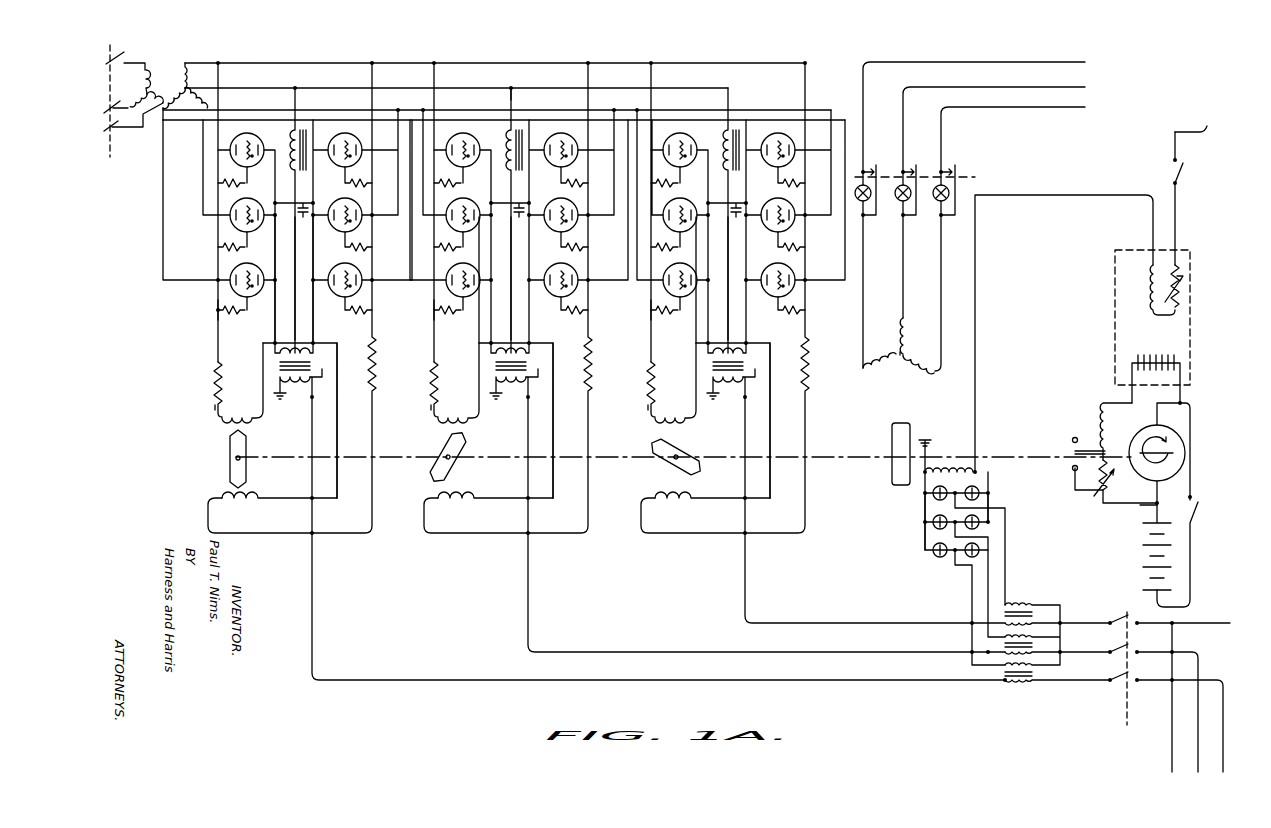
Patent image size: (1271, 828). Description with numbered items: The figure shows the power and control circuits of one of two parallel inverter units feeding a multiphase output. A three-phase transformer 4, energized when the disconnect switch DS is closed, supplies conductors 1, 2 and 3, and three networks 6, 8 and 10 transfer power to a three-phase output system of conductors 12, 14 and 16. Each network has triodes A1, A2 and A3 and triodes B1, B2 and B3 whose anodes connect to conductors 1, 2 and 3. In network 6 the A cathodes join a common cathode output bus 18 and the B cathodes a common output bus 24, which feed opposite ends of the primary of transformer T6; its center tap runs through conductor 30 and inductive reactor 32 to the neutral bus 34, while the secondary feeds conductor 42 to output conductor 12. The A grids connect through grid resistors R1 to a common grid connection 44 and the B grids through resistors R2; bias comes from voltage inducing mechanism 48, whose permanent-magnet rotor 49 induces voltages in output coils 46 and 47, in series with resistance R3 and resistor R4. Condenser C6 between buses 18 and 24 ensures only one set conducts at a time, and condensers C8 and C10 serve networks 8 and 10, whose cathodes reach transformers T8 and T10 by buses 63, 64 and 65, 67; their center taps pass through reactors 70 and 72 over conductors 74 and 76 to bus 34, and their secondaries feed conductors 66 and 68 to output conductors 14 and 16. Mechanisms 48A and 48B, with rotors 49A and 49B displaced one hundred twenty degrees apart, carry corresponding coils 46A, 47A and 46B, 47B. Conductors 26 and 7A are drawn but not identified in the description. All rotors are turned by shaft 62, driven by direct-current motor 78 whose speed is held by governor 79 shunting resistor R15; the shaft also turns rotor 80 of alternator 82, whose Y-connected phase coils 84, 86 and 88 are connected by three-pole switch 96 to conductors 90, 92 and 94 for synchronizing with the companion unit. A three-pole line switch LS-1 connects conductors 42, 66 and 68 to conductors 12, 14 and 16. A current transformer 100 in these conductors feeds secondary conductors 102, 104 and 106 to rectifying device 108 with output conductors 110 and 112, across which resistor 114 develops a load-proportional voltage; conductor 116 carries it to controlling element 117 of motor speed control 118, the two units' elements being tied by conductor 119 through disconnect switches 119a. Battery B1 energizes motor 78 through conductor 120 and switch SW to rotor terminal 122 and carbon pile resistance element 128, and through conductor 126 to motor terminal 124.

The disconnect switch DS is at (121, 53).
The three-phase transformer 4 is at (162, 72).
The input conductor 1 is at (258, 63).
The neutral bus 34 is at (320, 86).
The input conductor 2 is at (246, 111).
The input conductor 3 is at (186, 128).
The common grid connection 44 is at (212, 257).
The triode A1 is at (254, 136).
The triode A2 is at (252, 193).
The triode A3 is at (248, 265).
The triode B1 is at (341, 136).
The triode B2 is at (342, 200).
The triode B3 is at (352, 264).
The grid resistor R1 is at (447, 247).
The grid resistor R2 is at (585, 244).
The series resistance R3 is at (224, 376).
The series resistor R4 is at (374, 365).
The inductive reactor 32 is at (293, 134).
The inductive reactor 70 is at (507, 139).
The inductive reactor 72 is at (725, 139).
The conductor 74 is at (512, 96).
The condenser C6 is at (300, 224).
The condenser C8 is at (519, 222).
The condenser C10 is at (736, 208).
The conductor 26 is at (313, 245).
The output conductor 16 is at (278, 247).
The conductor 30 is at (292, 285).
The conductor 7A is at (509, 237).
The conductor 76 is at (726, 238).
The common cathode output bus 18 is at (263, 355).
The output transformer T8 is at (529, 380).
The output transformer T10 is at (749, 378).
The transformer T6 is at (315, 383).
The common output bus 24 is at (336, 420).
The bus 64 is at (544, 416).
The bus 67 is at (775, 418).
The bus 63 is at (482, 328).
The bus 65 is at (702, 328).
The output coil 46 is at (245, 406).
The relay coil 46A is at (470, 415).
The relay coil 46B is at (696, 415).
The output coil 47 is at (242, 504).
The relay coil 47A is at (455, 497).
The relay coil 47B is at (688, 500).
The rotor 49 is at (250, 451).
The rotor 49A is at (436, 437).
The rotor 49B is at (676, 447).
The voltage inducing mechanism 48 is at (206, 440).
The voltage inducing mechanism 48A is at (429, 431).
The voltage inducing mechanism 48B is at (645, 433).
The network 6 is at (205, 298).
The network 8 is at (425, 318).
The network 10 is at (644, 313).
The three-phase current transformer 100 is at (1002, 694).
The conductor 42 is at (395, 679).
The conductor 66 is at (527, 592).
The conductor 68 is at (748, 584).
The shaft 62 is at (828, 454).
The conductor 90 is at (1085, 62).
The conductor 94 is at (1085, 87).
The conductor 92 is at (1085, 107).
The three-pole switch 96 is at (965, 141).
The phase coil 88 is at (902, 326).
The phase coil 86 is at (908, 352).
The phase coil 84 is at (876, 378).
The three-phase alternator 82 is at (872, 412).
The rotor 80 is at (890, 436).
The conductor 116 is at (976, 343).
The resistor 114 is at (933, 462).
The full-wave three-phase rectifying device 108 is at (1001, 489).
The D.C. output conductor 110 is at (992, 496).
The D.C. output conductor 112 is at (922, 512).
The secondary output conductor 106 is at (1006, 584).
The secondary output conductor 104 is at (992, 561).
The secondary output conductor 102 is at (969, 594).
The D.C. motor speed control 118 is at (1113, 296).
The adjustable controlling element 117 is at (1148, 272).
The disconnect switch 119a is at (1182, 180).
The conductor 119 is at (1207, 126).
The carbon pile resistance element 128 is at (1146, 358).
The direct-current motor 78 is at (1095, 407).
The governor 79 is at (1070, 442).
The current-controlling resistor R15 is at (1125, 481).
The motor rotor terminal 122 is at (1190, 406).
The switch SW is at (1198, 519).
The motor terminal 124 is at (1164, 502).
The conductor 126 is at (1150, 508).
The conductor 120 is at (1192, 590).
The three-pole line switch LS-1 is at (1111, 695).
The output conductor 14 is at (1194, 650).
The output conductor 12 is at (1212, 680).